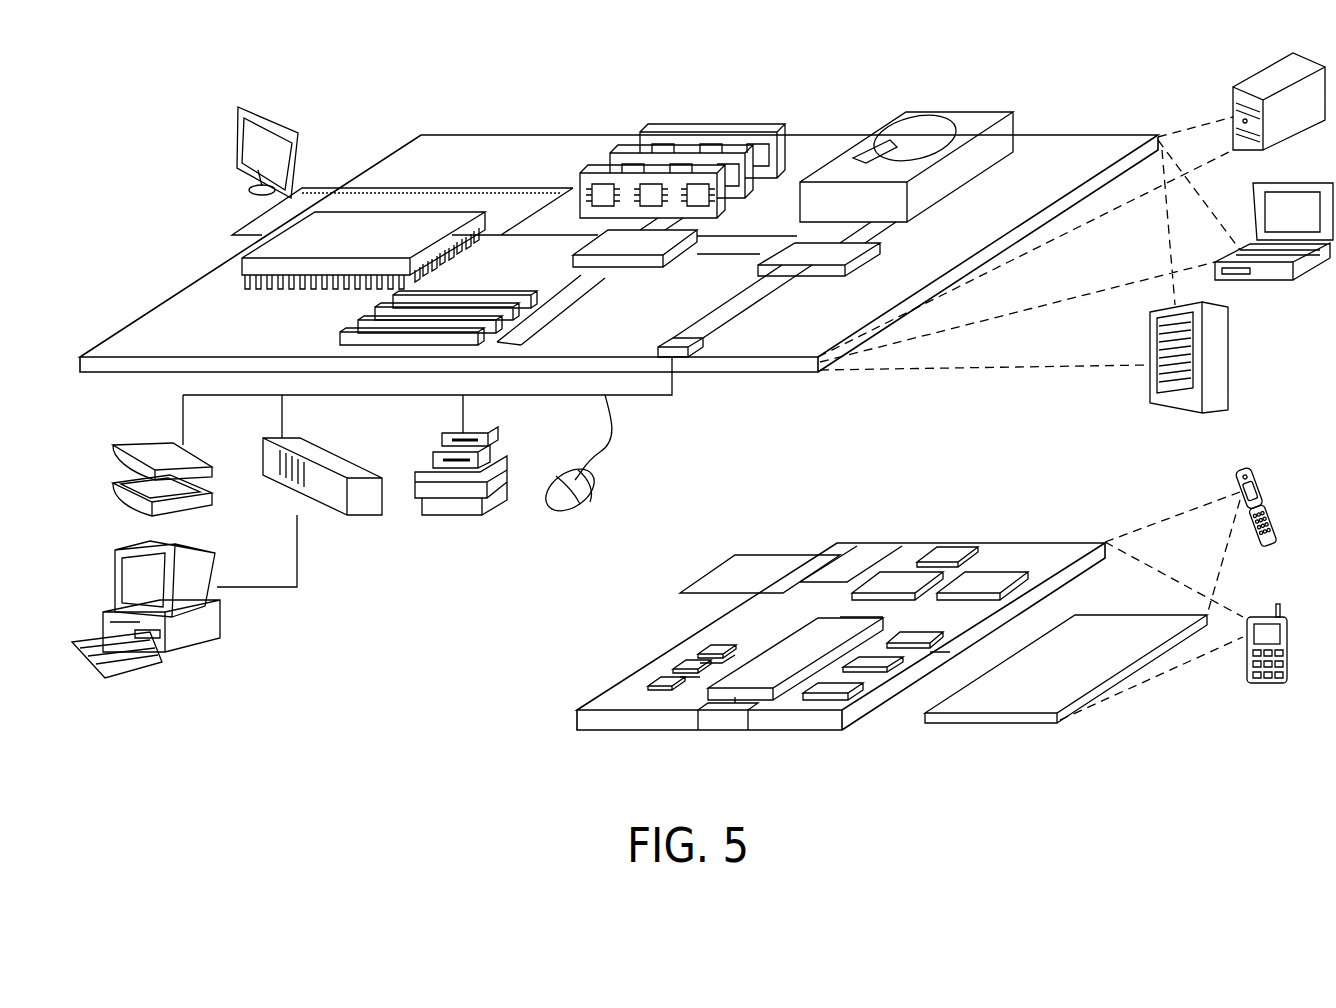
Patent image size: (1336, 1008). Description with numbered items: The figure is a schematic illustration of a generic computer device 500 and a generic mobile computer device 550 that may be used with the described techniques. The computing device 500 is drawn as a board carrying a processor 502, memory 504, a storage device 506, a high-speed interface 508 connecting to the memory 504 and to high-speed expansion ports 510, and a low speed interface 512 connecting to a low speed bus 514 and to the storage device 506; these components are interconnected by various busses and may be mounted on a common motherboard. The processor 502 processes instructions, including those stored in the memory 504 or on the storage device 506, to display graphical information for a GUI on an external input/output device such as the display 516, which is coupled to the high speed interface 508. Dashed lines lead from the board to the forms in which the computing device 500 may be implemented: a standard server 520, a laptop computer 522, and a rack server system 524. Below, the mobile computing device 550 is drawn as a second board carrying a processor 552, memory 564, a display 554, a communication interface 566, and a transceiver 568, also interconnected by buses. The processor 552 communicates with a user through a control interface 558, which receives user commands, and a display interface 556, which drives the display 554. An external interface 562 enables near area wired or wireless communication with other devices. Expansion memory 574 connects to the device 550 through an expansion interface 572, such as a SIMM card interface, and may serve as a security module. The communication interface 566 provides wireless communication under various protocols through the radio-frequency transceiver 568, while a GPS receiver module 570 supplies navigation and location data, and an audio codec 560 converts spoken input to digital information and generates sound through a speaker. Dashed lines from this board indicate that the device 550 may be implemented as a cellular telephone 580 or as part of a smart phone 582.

The computing device 500 is at (372, 80).
The processor 502 is at (266, 242).
The memory 504 is at (716, 128).
The storage device 506 is at (951, 112).
The high-speed interface 508 is at (646, 246).
The high-speed expansion ports 510 is at (367, 316).
The low speed interface 512 is at (791, 252).
The low speed bus 514 is at (681, 342).
The display 516 is at (243, 106).
The standard server 520 is at (1252, 84).
The laptop computer 522 is at (1308, 176).
The rack server system 524 is at (1231, 357).
The mobile computer device 550 is at (530, 738).
The processor 552 is at (765, 664).
The display 554 is at (1103, 632).
The display interface 556 is at (848, 690).
The control interface 558 is at (880, 660).
The audio codec 560 is at (922, 632).
The external interface 562 is at (725, 718).
The memory 564 is at (681, 669).
The communication interface 566 is at (893, 576).
The transceiver 568 is at (990, 576).
The GPS receiver module 570 is at (950, 553).
The expansion interface 572 is at (820, 556).
The expansion memory 574 is at (737, 556).
The cellular telephone 580 is at (1251, 468).
The smart phone 582 is at (1262, 615).